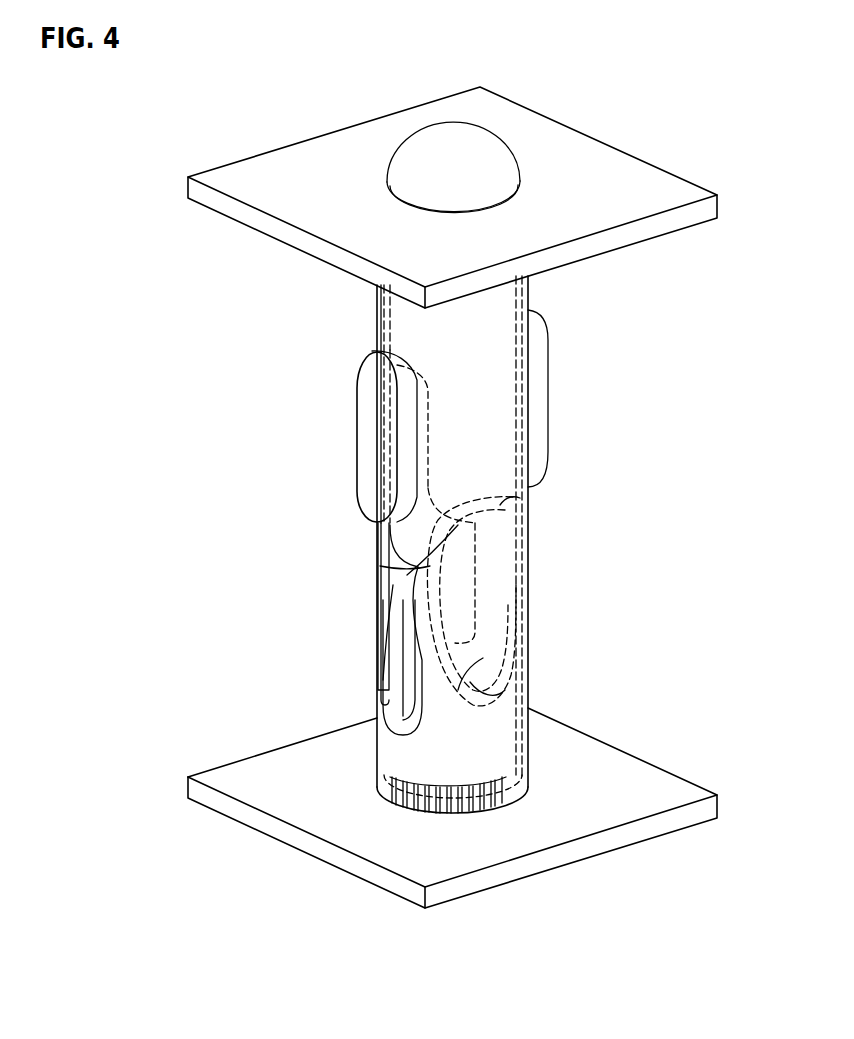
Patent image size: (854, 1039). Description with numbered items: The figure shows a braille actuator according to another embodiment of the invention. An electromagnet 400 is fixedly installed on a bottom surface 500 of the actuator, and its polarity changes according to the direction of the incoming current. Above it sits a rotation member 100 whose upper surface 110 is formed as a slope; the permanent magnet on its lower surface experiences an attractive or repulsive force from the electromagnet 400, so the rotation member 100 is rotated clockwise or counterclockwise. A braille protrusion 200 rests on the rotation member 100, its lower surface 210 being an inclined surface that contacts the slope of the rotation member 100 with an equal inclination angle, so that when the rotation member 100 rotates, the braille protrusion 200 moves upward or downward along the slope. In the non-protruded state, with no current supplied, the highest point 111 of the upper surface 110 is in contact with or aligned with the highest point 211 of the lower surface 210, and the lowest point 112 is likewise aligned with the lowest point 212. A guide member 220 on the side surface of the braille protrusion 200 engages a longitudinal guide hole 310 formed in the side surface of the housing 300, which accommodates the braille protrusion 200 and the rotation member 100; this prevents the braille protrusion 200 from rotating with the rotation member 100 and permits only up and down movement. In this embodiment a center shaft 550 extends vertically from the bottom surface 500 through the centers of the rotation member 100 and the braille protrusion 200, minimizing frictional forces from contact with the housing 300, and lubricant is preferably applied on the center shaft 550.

The rotation member 100 is at (400, 668).
The upper surface 110 is at (483, 658).
The highest point 111 is at (407, 575).
The lowest point 112 is at (505, 690).
The braille protrusion 200 is at (478, 405).
The lower surface 210 is at (495, 525).
The highest point 211 is at (512, 500).
The lowest point 212 is at (392, 567).
The guide member 220 is at (383, 417).
The housing 300 is at (378, 305).
The guide hole 310 is at (377, 687).
The electromagnet 400 is at (393, 798).
The bottom surface 500 is at (641, 787).
The center shaft 550 is at (455, 577).